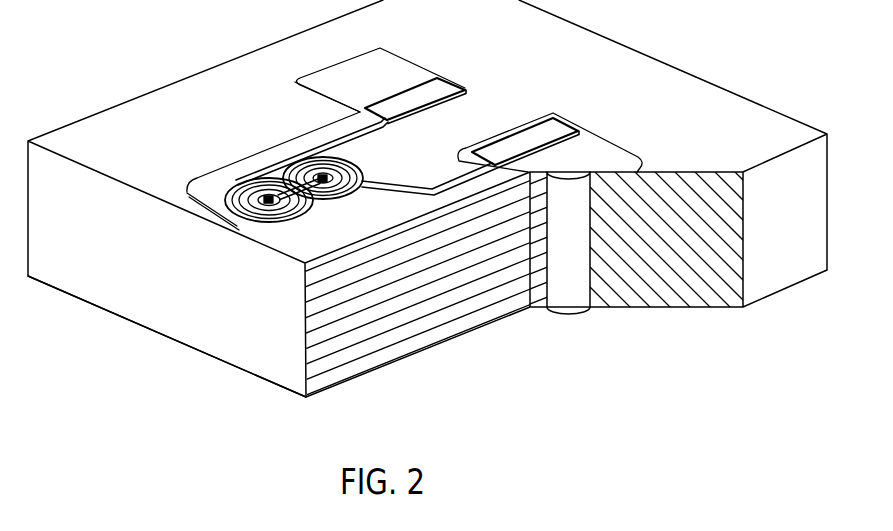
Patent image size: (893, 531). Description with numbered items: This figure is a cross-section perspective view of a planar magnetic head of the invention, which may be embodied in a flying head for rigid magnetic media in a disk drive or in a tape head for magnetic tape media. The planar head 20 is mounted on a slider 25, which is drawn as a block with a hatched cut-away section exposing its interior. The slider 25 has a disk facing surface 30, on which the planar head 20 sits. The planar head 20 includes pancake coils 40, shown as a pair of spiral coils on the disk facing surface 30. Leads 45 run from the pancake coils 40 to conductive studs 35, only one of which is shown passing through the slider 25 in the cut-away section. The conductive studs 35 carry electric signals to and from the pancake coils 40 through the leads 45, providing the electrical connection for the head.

The planar head 20 is at (294, 234).
The slider 25 is at (147, 310).
The disk facing surface 30 is at (172, 144).
The conductive studs 35 is at (567, 307).
The pancake coils 40 is at (321, 170).
The leads 45 is at (391, 78).